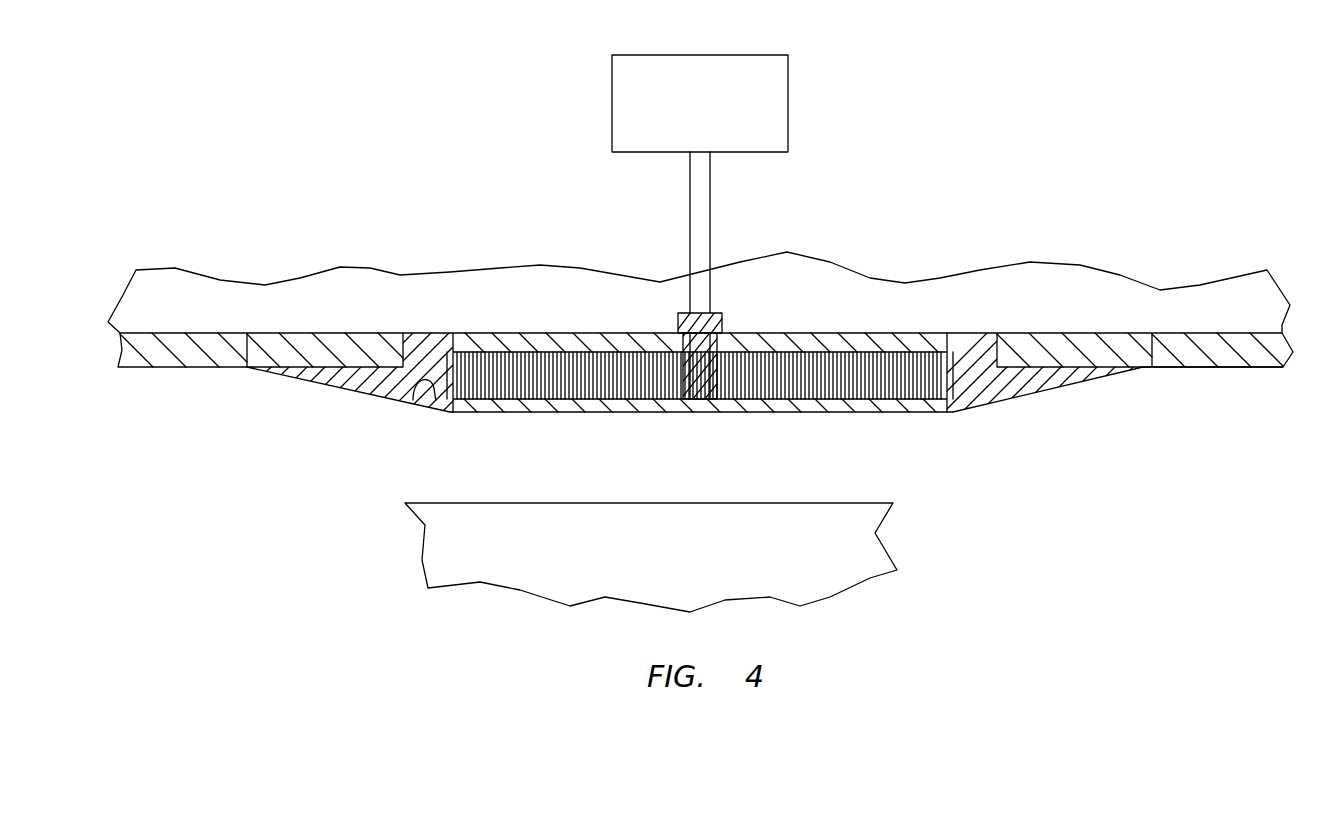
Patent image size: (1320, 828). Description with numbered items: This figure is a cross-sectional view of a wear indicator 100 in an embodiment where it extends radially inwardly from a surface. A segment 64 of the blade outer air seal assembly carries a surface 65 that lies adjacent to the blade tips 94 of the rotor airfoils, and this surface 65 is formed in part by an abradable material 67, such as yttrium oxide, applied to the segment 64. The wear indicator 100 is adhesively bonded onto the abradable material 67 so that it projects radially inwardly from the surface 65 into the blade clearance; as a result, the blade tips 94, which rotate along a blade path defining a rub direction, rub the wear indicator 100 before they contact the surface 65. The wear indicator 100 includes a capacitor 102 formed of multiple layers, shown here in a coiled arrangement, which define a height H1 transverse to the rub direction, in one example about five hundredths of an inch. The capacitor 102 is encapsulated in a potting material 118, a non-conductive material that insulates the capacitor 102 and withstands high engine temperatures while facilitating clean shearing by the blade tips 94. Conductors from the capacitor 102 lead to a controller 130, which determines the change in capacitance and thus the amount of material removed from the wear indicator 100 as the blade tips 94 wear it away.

The segment 64 is at (1186, 124).
The abradable material 67 is at (1250, 350).
The wear indicator 100 is at (1103, 425).
The potting material 118 is at (1055, 382).
The surface 65 is at (1163, 370).
The capacitor 102 is at (922, 381).
The controller 130 is at (700, 232).
The blade tip 94 is at (655, 504).
The height H1 is at (413, 400).